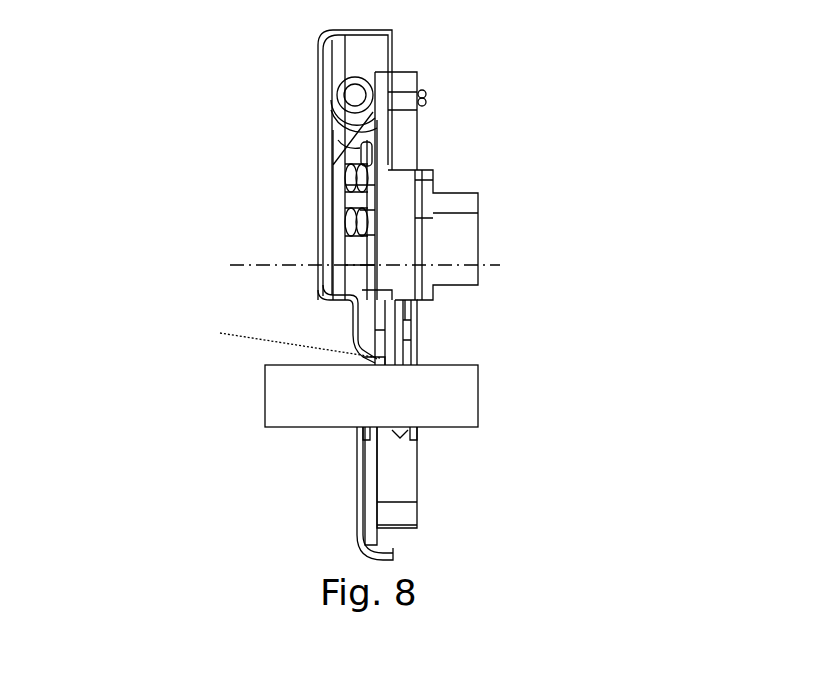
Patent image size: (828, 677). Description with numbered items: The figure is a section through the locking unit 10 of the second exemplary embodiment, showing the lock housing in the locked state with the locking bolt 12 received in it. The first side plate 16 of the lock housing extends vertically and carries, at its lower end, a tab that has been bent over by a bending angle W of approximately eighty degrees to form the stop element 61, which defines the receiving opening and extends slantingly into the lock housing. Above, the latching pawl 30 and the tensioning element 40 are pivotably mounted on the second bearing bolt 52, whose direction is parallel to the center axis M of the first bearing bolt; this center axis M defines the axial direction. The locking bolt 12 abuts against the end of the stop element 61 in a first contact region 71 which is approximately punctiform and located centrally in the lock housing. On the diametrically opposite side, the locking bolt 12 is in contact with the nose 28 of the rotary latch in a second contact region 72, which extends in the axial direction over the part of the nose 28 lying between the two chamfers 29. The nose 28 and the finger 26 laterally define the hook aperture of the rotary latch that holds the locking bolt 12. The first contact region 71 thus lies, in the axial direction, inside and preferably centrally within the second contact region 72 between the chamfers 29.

The locking unit 10 is at (110, 70).
The locking bolt 12 is at (468, 398).
The first side plate 16 is at (357, 515).
The finger 26 is at (413, 355).
The nose 28 is at (408, 492).
The chamfer 29 is at (362, 440).
The latching pawl 30 is at (405, 115).
The tensioning element 40 is at (340, 150).
The second bearing bolt 52 is at (468, 244).
The stop element 61 is at (408, 353).
The first contact region 71 is at (395, 364).
The second contact region 72 is at (392, 433).
The center axis M is at (243, 265).
The bending angle W is at (338, 345).